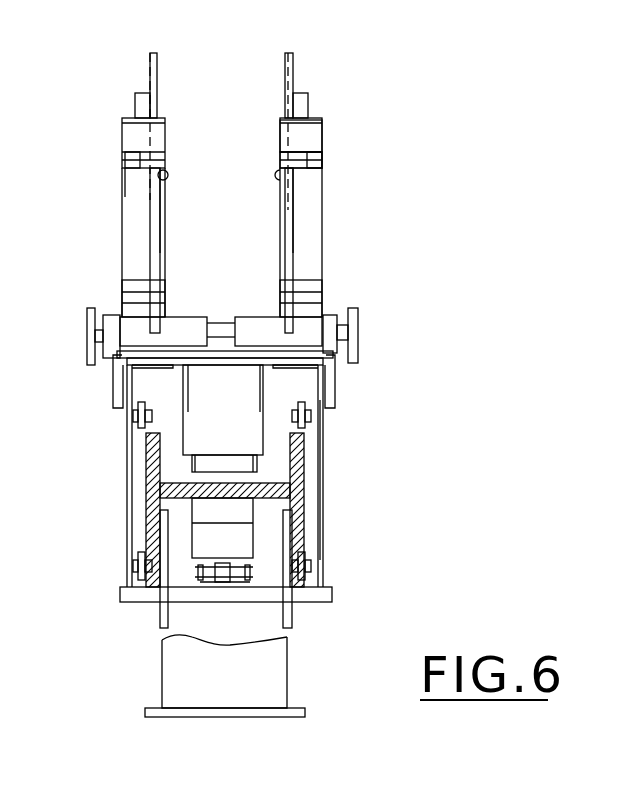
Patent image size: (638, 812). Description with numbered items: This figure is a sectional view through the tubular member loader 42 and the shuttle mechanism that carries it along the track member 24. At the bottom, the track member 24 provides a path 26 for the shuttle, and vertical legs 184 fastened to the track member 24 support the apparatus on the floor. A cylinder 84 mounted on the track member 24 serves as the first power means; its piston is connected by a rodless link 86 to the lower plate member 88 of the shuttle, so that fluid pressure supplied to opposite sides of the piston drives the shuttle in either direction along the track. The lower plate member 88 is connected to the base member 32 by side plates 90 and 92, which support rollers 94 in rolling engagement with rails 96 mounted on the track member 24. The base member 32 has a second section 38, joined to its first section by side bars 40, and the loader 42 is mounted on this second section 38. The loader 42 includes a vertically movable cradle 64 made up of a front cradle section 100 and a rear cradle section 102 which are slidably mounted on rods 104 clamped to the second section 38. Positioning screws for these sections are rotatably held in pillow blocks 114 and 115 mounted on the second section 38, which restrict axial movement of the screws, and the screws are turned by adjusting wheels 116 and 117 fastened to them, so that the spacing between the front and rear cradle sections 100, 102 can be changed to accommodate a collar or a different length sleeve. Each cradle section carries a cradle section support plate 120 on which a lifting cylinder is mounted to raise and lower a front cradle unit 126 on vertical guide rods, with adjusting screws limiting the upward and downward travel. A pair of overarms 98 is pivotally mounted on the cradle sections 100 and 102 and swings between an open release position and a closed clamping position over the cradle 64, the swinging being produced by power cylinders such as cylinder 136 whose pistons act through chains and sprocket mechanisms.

The overarms 98 is at (284, 64).
The rear cradle section 102 is at (138, 122).
The front cradle section 100 is at (310, 121).
The vertically movable cradle 64 is at (319, 131).
The tubular member loader 42 is at (375, 135).
The front cradle unit 126 is at (312, 142).
The cylinder 136 is at (312, 206).
The cradle section support plate 120 is at (310, 322).
The second section 38 is at (145, 358).
The rods 104 is at (218, 330).
The pillow block 115 is at (110, 328).
The adjusting wheel 116 is at (91, 320).
The pillow block 114 is at (330, 324).
The adjusting wheel 117 is at (360, 333).
The side bars 40 is at (113, 377).
The path 26 is at (118, 398).
The base member 32 is at (270, 355).
The side plate 90 is at (126, 456).
The side plate 92 is at (323, 448).
The rollers 94 is at (135, 416).
The rails 96 is at (144, 441).
The track member 24 is at (318, 468).
The cylinder 84 is at (237, 543).
The rodless link 86 is at (228, 572).
The lower plate member 88 is at (323, 595).
The vertical legs 184 is at (278, 678).